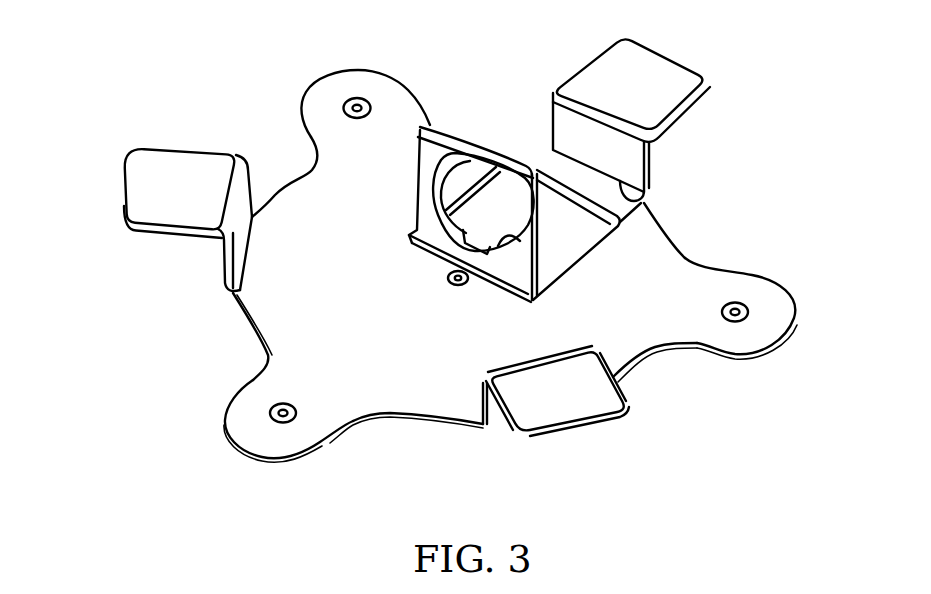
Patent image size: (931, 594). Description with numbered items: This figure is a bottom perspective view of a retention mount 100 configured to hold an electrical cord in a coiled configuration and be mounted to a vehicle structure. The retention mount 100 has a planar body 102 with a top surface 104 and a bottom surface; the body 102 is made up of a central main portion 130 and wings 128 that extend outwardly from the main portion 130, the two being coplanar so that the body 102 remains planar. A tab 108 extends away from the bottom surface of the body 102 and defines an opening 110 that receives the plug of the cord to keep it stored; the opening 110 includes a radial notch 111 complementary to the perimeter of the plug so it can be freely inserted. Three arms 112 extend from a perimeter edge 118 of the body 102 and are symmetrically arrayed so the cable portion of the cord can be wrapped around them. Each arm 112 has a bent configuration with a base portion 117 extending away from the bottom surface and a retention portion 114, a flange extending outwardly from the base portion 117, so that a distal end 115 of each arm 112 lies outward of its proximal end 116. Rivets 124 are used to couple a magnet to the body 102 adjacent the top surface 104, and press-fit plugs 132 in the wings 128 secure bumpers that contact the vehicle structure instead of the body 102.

The retention mount 100 is at (240, 88).
The body 102 is at (398, 380).
The top surface 104 is at (610, 345).
The tab 108 is at (430, 137).
The opening 110 is at (497, 233).
The radial notch 111 is at (463, 247).
The arm 112 is at (200, 160).
The retention portion 114 is at (130, 192).
The distal end 115 is at (123, 207).
The proximal end 116 is at (250, 253).
The base portion 117 is at (223, 263).
The perimeter edge 118 is at (677, 250).
The rivet 124 is at (452, 284).
The wing 128 is at (384, 78).
The main portion 130 is at (290, 207).
The press-fit plug 132 is at (358, 98).